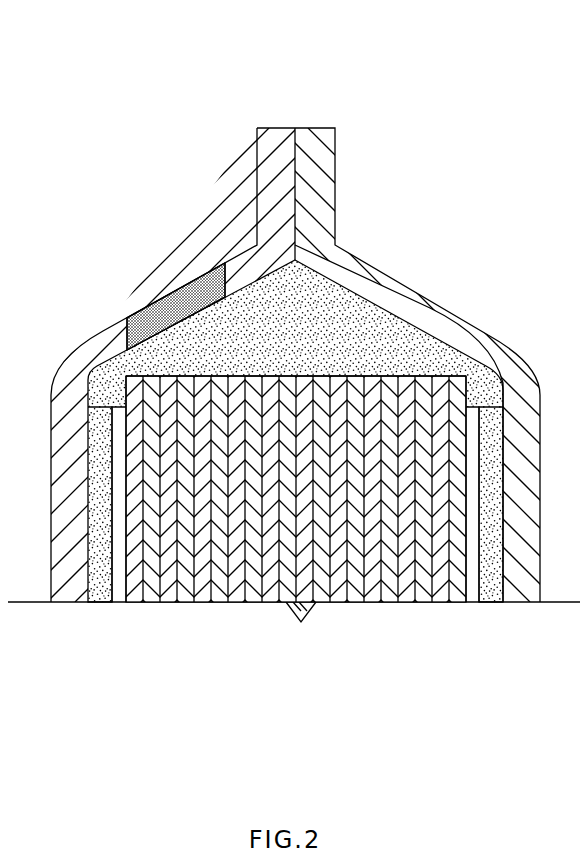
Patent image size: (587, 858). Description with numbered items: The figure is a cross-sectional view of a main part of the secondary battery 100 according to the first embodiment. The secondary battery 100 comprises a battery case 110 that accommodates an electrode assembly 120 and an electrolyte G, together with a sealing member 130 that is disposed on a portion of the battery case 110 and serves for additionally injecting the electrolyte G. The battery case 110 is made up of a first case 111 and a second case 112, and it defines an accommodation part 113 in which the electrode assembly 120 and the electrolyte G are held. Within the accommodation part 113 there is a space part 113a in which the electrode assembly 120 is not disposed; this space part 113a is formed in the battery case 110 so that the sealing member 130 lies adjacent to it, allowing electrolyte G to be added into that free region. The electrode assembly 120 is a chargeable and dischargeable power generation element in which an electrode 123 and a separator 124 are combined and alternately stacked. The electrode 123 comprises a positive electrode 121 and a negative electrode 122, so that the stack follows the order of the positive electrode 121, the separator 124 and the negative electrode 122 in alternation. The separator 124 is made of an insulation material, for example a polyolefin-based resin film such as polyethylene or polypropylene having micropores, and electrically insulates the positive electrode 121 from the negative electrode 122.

The secondary battery 100 is at (512, 50).
The battery case 110 is at (320, 63).
The first case 111 is at (272, 127).
The second case 112 is at (320, 127).
The accommodation part 113 is at (407, 340).
The space part 113a is at (353, 323).
The electrode assembly 120 is at (225, 628).
The positive electrode 121 is at (402, 603).
The negative electrode 122 is at (352, 603).
The electrode 123 is at (407, 658).
The separator 124 is at (447, 603).
The sealing member 130 is at (183, 300).
The electrolyte G is at (430, 317).